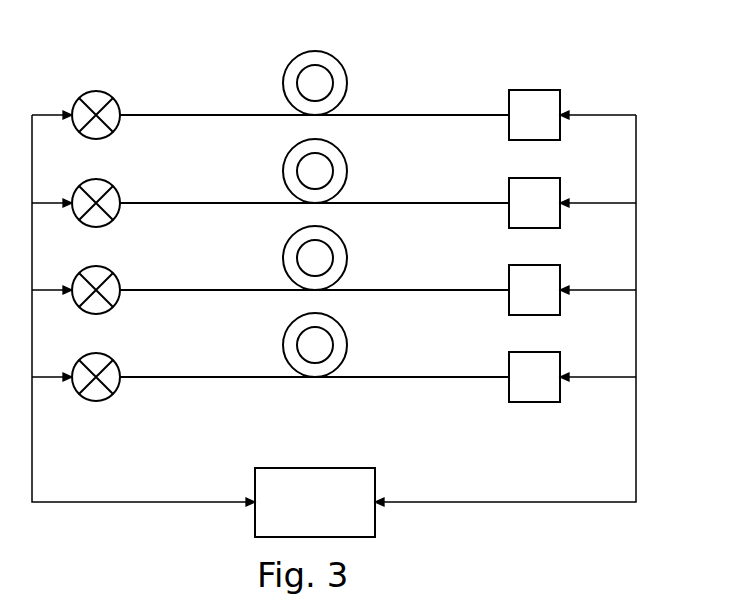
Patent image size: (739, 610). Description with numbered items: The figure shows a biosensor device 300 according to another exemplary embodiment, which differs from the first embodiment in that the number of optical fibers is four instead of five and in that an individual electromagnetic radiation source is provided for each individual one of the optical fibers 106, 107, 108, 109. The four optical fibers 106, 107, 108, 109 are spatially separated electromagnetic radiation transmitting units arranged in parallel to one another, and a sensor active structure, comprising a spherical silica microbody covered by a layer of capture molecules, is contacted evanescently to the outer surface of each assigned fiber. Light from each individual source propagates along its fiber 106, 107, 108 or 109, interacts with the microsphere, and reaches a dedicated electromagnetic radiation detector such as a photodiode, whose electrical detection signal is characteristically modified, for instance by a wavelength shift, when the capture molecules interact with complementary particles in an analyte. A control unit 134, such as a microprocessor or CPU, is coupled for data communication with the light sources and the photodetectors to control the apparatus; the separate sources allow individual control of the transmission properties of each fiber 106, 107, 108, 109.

The biosensor device 300 is at (623, 57).
The optical fiber 106 is at (445, 114).
The optical fiber 107 is at (446, 202).
The optical fiber 108 is at (446, 289).
The optical fiber 109 is at (446, 376).
The control unit 134 is at (312, 468).